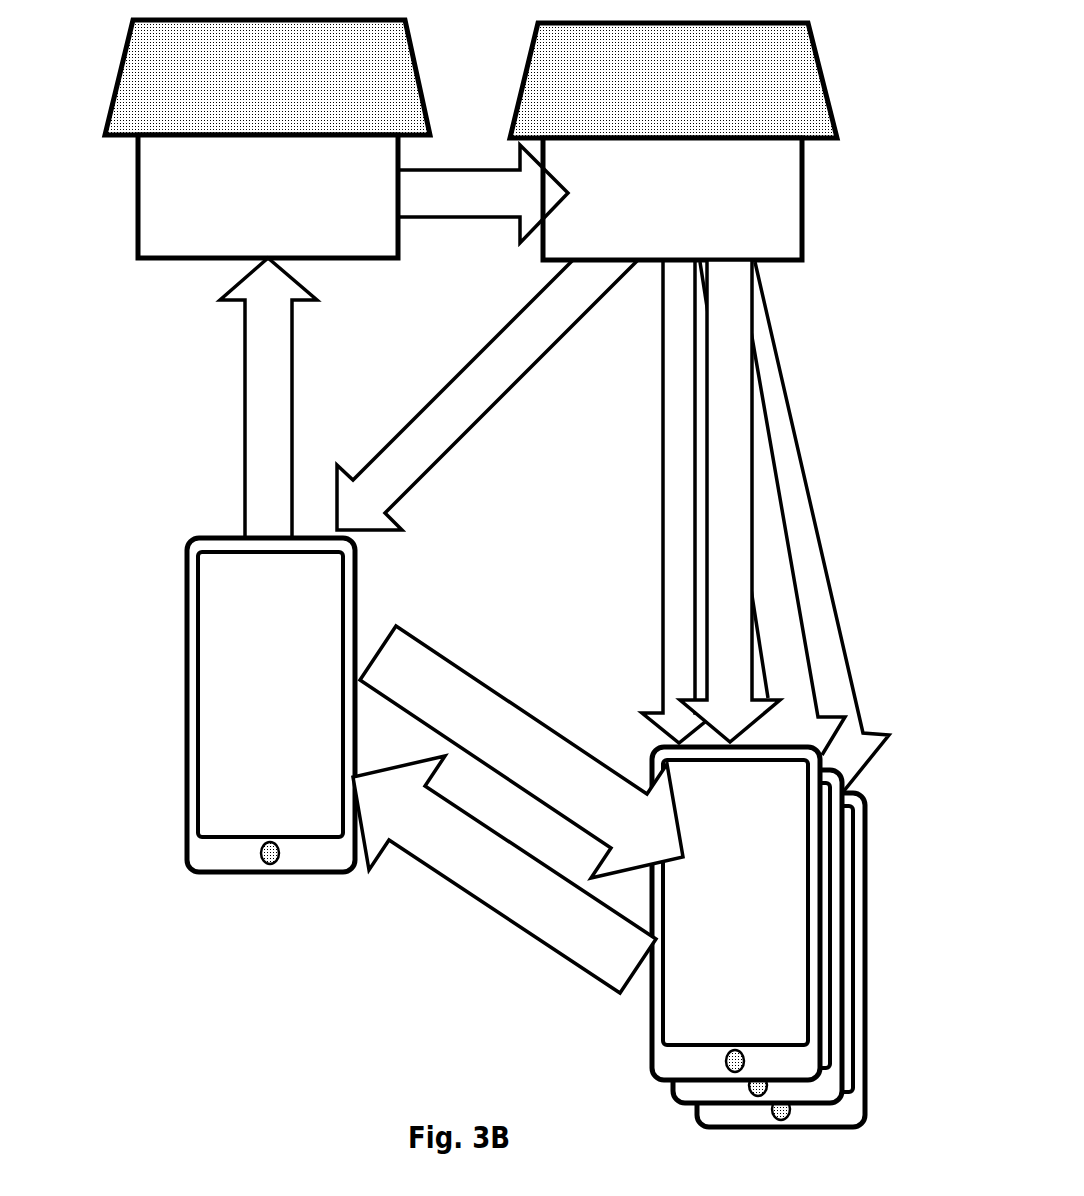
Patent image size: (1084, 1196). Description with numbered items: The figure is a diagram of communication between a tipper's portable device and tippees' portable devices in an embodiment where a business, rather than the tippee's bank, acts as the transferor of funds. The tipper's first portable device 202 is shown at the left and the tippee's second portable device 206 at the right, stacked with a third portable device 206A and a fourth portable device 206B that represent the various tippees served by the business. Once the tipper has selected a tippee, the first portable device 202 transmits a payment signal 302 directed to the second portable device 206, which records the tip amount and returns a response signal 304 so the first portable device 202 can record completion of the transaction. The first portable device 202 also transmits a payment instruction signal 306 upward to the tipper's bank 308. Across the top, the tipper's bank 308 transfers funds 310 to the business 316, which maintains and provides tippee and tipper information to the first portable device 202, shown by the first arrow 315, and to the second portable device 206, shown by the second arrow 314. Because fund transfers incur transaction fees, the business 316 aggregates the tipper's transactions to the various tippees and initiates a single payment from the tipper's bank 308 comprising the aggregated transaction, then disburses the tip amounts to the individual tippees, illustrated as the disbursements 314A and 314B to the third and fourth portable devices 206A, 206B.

The tipper's bank 308 is at (200, 193).
The business 316 is at (735, 228).
The transfer of funds 310 is at (453, 200).
The payment instruction signal 306 is at (270, 447).
The first arrow 315 is at (477, 390).
The second arrow 314 is at (753, 547).
The disbursement of tip amount 314A is at (790, 483).
The disbursement of tip amount 314B is at (783, 632).
The payment signal 302 is at (498, 720).
The response signal 304 is at (487, 862).
The first portable device 202 is at (222, 792).
The second portable device 206 is at (717, 962).
The third portable device 206A is at (832, 938).
The fourth portable device 206B is at (862, 1037).